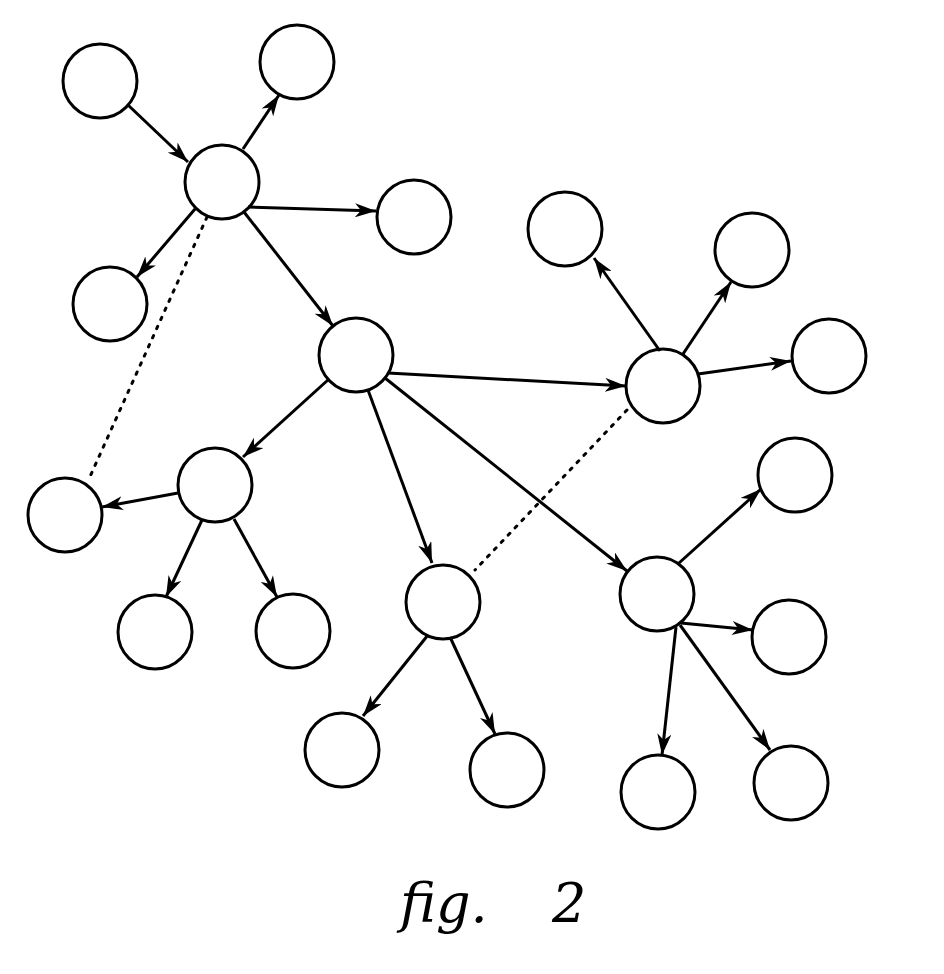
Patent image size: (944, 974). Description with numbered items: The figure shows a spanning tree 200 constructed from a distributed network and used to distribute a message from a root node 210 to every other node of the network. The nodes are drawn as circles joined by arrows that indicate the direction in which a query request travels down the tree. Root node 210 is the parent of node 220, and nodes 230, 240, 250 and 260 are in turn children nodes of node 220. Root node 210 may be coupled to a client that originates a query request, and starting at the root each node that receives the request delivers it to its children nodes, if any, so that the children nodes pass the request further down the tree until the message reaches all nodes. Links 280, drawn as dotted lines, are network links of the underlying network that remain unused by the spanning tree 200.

The spanning tree 200 is at (532, 31).
The root node 210 is at (72, 95).
The node 220 is at (194, 196).
The node 230 is at (82, 318).
The node 240 is at (328, 369).
The node 250 is at (386, 231).
The node 260 is at (269, 76).
The links 280 is at (125, 400).